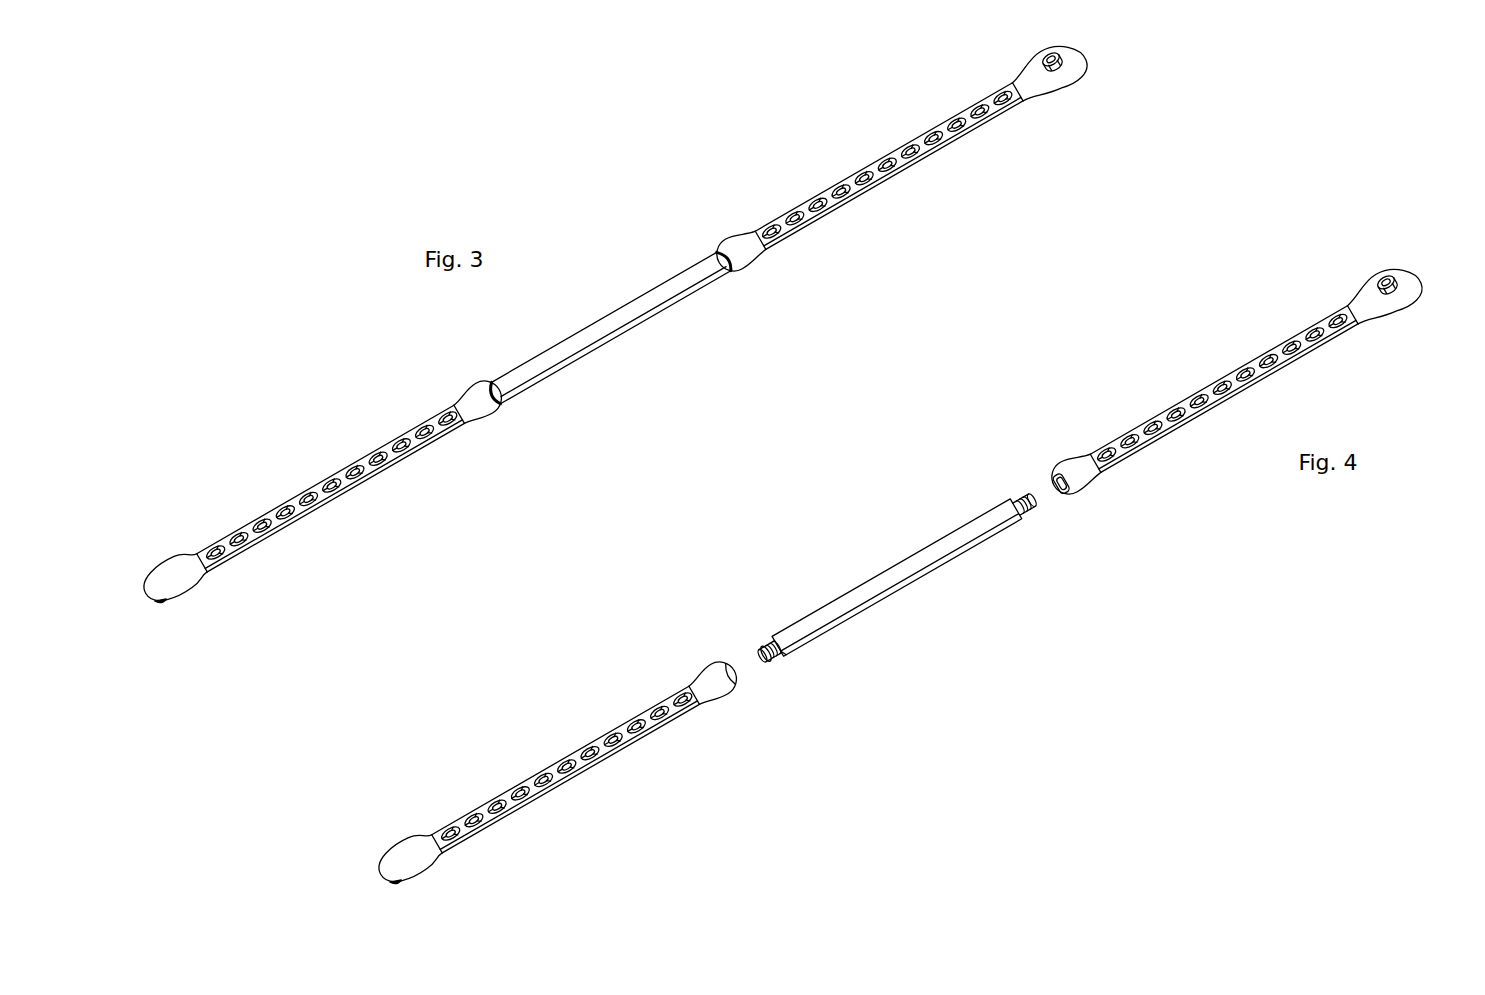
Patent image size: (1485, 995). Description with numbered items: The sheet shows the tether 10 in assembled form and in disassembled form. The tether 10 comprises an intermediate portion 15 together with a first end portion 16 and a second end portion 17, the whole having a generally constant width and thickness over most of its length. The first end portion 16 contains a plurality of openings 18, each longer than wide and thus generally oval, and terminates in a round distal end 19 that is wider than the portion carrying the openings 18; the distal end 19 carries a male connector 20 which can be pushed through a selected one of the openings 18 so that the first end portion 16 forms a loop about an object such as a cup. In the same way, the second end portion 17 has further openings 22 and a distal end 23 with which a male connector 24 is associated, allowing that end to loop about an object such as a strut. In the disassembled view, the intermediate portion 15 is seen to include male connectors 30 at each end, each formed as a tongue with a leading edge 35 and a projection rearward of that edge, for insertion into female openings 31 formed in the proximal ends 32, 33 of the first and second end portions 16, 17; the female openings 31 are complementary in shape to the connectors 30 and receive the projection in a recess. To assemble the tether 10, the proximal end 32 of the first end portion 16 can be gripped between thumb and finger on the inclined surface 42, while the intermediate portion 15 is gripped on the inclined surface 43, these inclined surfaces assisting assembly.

In FIG. 3, the tether 10 is at (632, 259).
In FIG. 4, the tether 10 is at (895, 520).
In FIG. 3, the intermediate portion 15 is at (608, 320).
In FIG. 4, the intermediate portion 15 is at (873, 585).
In FIG. 3, the first end portion 16 is at (338, 475).
In FIG. 4, the first end portion 16 is at (573, 752).
In FIG. 3, the second end portion 17 is at (940, 130).
In FIG. 4, the second end portion 17 is at (1275, 352).
In FIG. 3, the openings 18 is at (417, 423).
In FIG. 4, the openings 18 is at (650, 710).
In FIG. 3, the distal end 19 is at (152, 575).
In FIG. 4, the distal end 19 is at (386, 857).
In FIG. 3, the male connector 20 is at (152, 598).
In FIG. 4, the male connector 20 is at (387, 880).
In FIG. 3, the openings 22 is at (883, 158).
In FIG. 4, the openings 22 is at (1218, 383).
In FIG. 3, the distal end 23 is at (1082, 68).
In FIG. 4, the distal end 23 is at (1414, 292).
In FIG. 3, the male connector 24 is at (1056, 55).
In FIG. 4, the male connector 24 is at (1390, 282).
In FIG. 4, the male connectors 30 is at (1016, 495).
In FIG. 4, the female openings 31 is at (1070, 489).
In FIG. 3, the proximal end 32 is at (472, 393).
In FIG. 4, the proximal end 32 is at (702, 686).
In FIG. 3, the proximal end 33 is at (735, 243).
In FIG. 4, the proximal end 33 is at (1067, 465).
In FIG. 4, the leading edge 35 is at (756, 662).
In FIG. 4, the inclined surface 42 is at (714, 690).
In FIG. 4, the inclined surface 43 is at (795, 650).